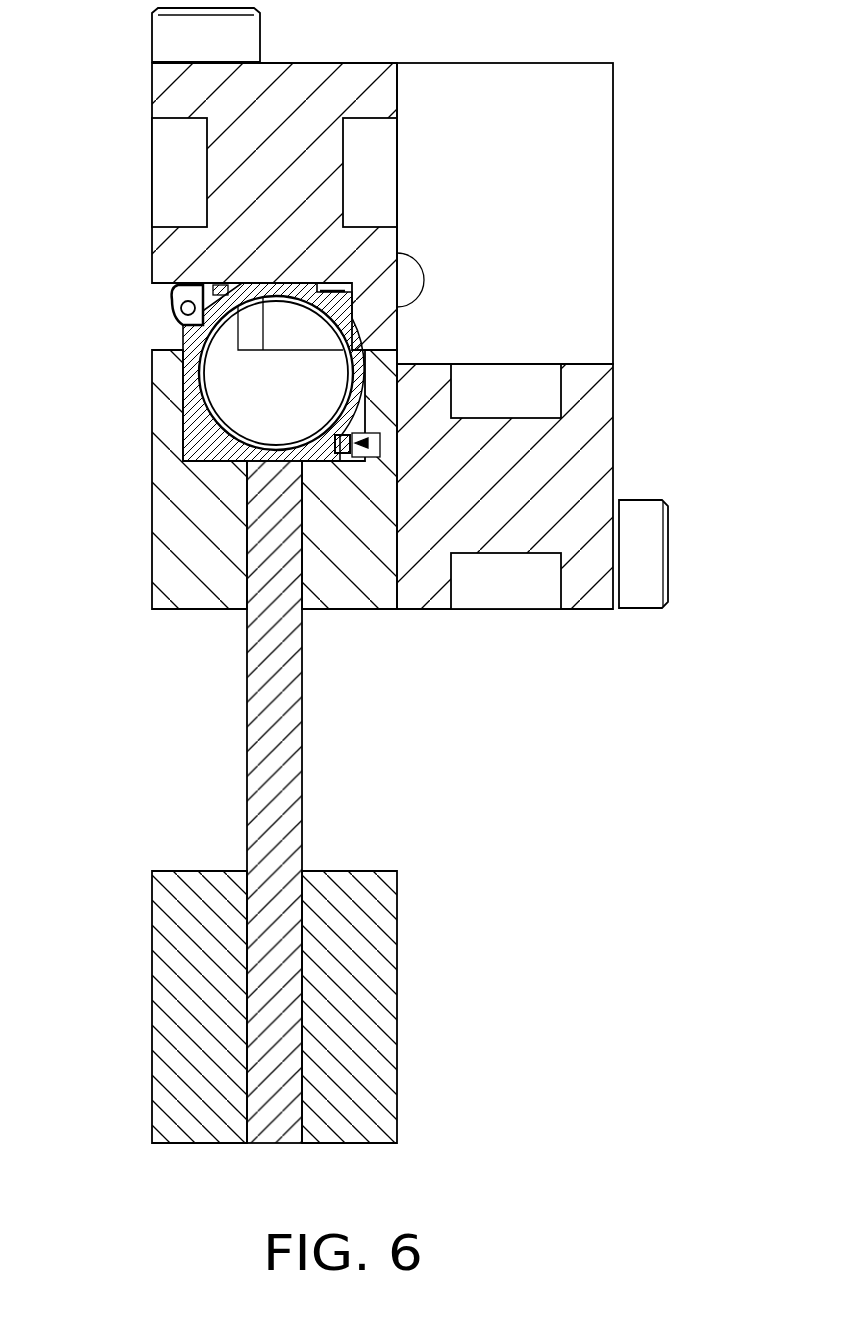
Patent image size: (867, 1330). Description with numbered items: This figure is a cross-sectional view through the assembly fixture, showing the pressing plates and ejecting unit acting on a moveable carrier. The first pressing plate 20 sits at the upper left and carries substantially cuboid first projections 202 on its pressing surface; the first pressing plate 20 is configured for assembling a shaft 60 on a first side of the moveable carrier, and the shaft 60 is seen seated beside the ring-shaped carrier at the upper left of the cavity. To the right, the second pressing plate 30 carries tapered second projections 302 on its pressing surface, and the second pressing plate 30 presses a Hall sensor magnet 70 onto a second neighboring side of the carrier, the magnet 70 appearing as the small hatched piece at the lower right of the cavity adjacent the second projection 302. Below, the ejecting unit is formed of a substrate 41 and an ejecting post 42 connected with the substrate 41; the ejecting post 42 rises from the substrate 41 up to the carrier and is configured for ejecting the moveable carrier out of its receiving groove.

The first pressing plate 20 is at (332, 103).
The first projections 202 is at (215, 283).
The second pressing plate 30 is at (583, 443).
The second projections 302 is at (370, 443).
The substrate 41 is at (365, 946).
The ejecting posts 42 is at (290, 775).
The shaft 60 is at (175, 298).
The Hall sensor magnet 70 is at (345, 462).